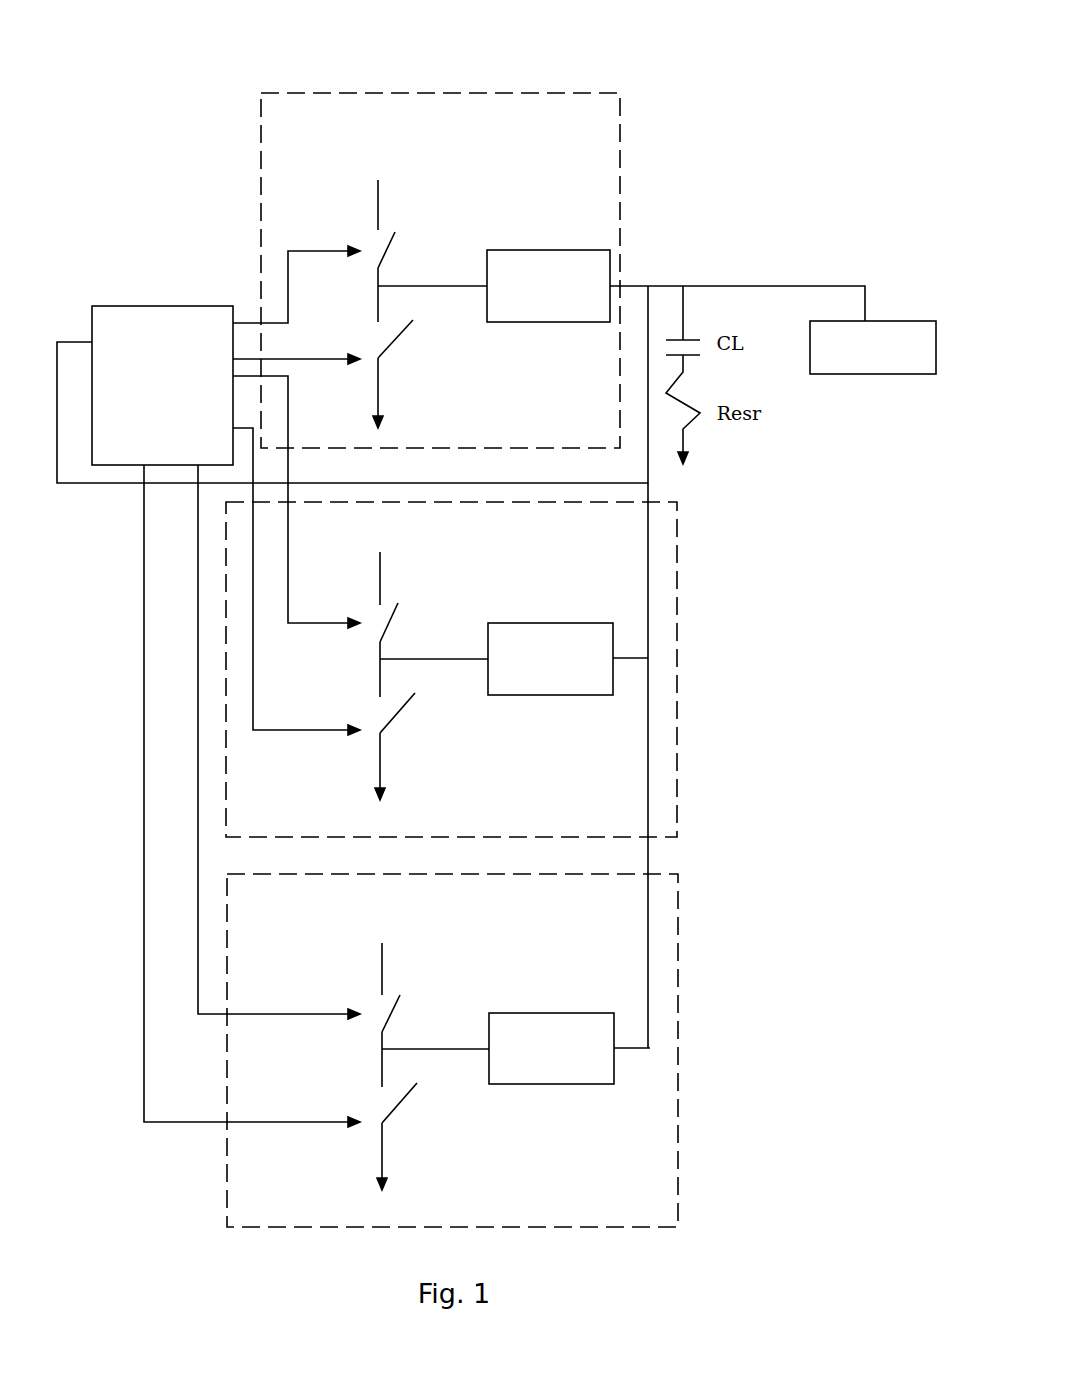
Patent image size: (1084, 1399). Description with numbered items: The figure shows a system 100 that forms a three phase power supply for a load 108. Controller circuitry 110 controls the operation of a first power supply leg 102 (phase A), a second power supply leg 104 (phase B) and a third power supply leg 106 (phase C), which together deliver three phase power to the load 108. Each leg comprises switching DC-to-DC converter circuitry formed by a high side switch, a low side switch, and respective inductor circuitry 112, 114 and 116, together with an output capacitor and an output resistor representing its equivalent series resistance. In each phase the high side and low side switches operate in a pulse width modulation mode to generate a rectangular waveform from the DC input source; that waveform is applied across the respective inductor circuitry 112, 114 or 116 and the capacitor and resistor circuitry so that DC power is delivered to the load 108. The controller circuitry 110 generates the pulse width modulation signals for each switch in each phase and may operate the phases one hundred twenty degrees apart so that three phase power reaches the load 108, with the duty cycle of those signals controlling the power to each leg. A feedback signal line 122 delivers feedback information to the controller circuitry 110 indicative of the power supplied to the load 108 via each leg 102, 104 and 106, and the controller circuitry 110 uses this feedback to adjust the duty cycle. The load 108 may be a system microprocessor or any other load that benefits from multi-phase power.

The system 100 is at (750, 113).
The first power supply leg 102 is at (313, 93).
The second power supply leg 104 is at (677, 677).
The third power supply leg 106 is at (678, 1048).
The load 108 is at (858, 374).
The controller circuitry 110 is at (188, 306).
The inductor circuitry 112 is at (548, 286).
The inductor circuitry 114 is at (568, 659).
The inductor circuitry 116 is at (569, 1048).
The feedback signal line 122 is at (100, 485).